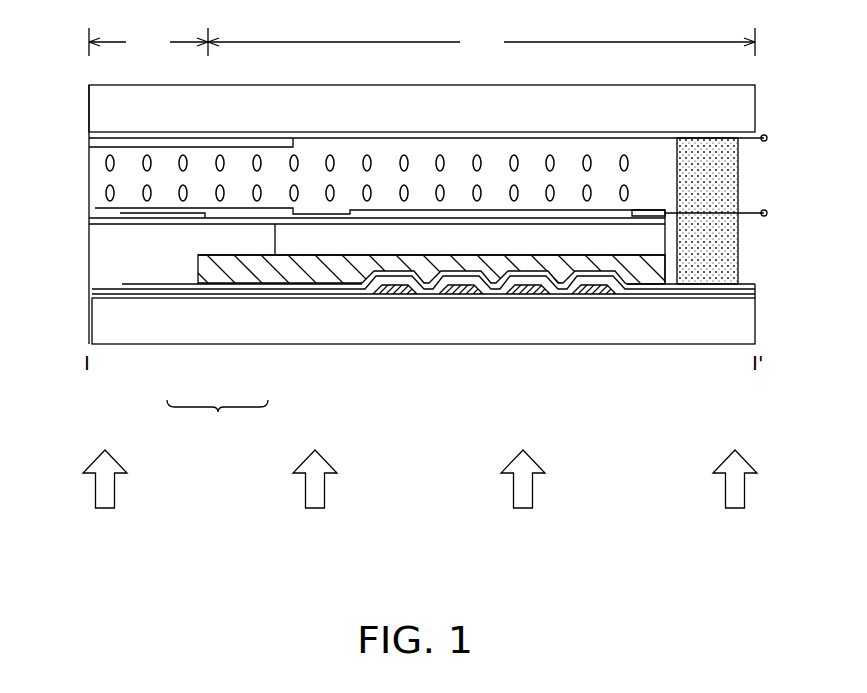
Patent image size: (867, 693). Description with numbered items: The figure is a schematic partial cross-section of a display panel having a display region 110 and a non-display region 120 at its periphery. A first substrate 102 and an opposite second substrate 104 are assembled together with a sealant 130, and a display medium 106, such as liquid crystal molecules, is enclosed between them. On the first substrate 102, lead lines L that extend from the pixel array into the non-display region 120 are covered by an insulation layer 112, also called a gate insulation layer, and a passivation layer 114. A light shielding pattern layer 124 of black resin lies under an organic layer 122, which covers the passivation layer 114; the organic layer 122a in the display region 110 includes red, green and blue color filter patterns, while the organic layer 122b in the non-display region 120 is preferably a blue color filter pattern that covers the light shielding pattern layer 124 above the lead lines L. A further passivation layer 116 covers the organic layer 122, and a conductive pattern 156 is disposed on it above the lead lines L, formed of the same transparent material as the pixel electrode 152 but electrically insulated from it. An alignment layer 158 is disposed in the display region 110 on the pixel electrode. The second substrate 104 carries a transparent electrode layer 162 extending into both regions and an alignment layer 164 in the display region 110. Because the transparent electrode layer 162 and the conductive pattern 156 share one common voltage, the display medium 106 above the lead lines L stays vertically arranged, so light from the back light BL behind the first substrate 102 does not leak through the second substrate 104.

The display region 110 is at (148, 42).
The non-display region 120 is at (481, 42).
The second substrate 104 is at (742, 107).
The transparent electrode layer 162 is at (533, 138).
The alignment layer 164 is at (90, 146).
The display medium 106 is at (106, 165).
The alignment layer 158 is at (95, 210).
The conductive pattern 156 is at (635, 211).
The pixel electrode 152 is at (92, 218).
The passivation layer 116 is at (100, 228).
The light shielding pattern layer 124 is at (337, 275).
The organic layer in the display region 122a is at (173, 267).
The organic layer in the non-display region 122b is at (303, 242).
The organic layer 122 is at (217, 416).
The lead lines L is at (393, 296).
The sealant 130 is at (720, 240).
The passivation layer 114 is at (748, 284).
The insulation layer 112 is at (752, 291).
The first substrate 102 is at (683, 326).
The back light BL is at (533, 493).